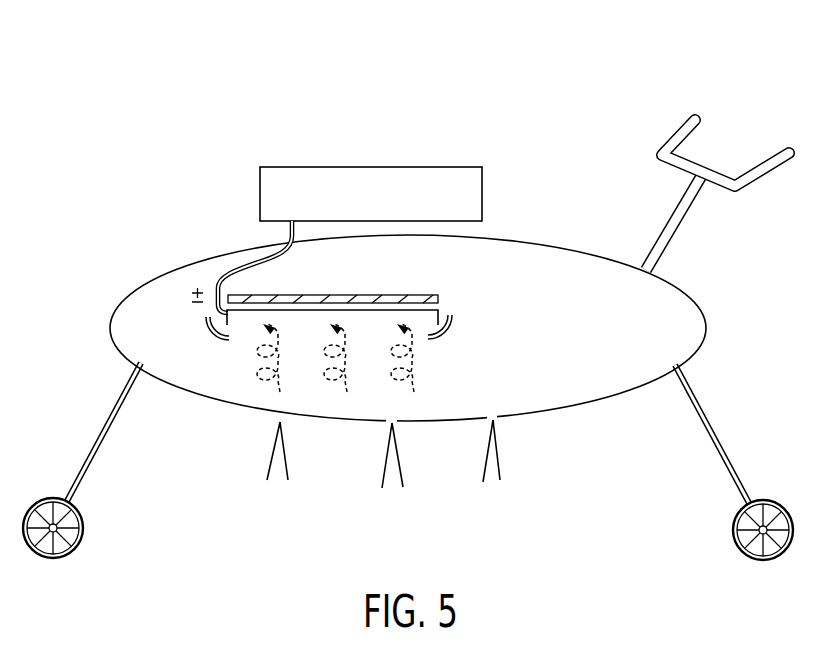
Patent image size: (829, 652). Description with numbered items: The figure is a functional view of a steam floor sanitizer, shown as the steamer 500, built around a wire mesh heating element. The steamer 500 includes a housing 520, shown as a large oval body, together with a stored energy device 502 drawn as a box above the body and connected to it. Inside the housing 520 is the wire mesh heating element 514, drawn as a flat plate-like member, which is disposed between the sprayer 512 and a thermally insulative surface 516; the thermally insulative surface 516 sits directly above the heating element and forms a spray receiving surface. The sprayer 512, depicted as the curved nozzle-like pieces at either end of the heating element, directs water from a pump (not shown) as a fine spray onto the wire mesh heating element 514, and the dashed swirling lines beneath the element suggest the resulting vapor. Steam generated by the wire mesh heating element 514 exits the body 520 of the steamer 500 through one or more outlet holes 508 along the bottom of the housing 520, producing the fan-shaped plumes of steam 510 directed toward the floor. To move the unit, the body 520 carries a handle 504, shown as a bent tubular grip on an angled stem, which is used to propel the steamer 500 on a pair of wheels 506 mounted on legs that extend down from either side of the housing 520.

The steamer 500 is at (514, 73).
The stored energy device 502 is at (320, 166).
The handle 504 is at (678, 126).
The wheel 506 is at (84, 530).
The outlet hole 508 is at (497, 410).
The steam 510 is at (498, 452).
The sprayer 512 is at (211, 334).
The wire mesh heating element 514 is at (383, 310).
The thermally insulative surface 516 is at (338, 295).
The housing 520 is at (593, 253).